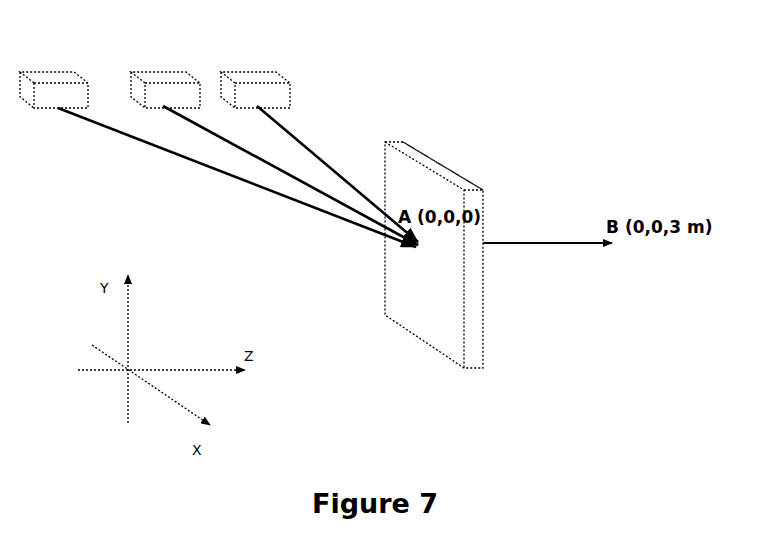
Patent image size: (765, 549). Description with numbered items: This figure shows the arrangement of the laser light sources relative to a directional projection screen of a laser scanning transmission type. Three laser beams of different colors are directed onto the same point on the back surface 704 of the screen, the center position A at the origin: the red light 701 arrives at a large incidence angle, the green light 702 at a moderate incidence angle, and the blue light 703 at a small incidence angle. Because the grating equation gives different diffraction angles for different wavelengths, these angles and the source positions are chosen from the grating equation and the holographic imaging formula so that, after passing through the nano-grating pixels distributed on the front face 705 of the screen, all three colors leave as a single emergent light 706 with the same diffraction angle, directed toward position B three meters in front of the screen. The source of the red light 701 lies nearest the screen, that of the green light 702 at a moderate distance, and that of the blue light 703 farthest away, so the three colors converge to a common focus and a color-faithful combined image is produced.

The red light 701 is at (286, 74).
The green light 702 is at (165, 72).
The blue light 703 is at (63, 72).
The back surface 704 is at (405, 275).
The front face 705 is at (450, 168).
The emergent light 706 is at (521, 244).